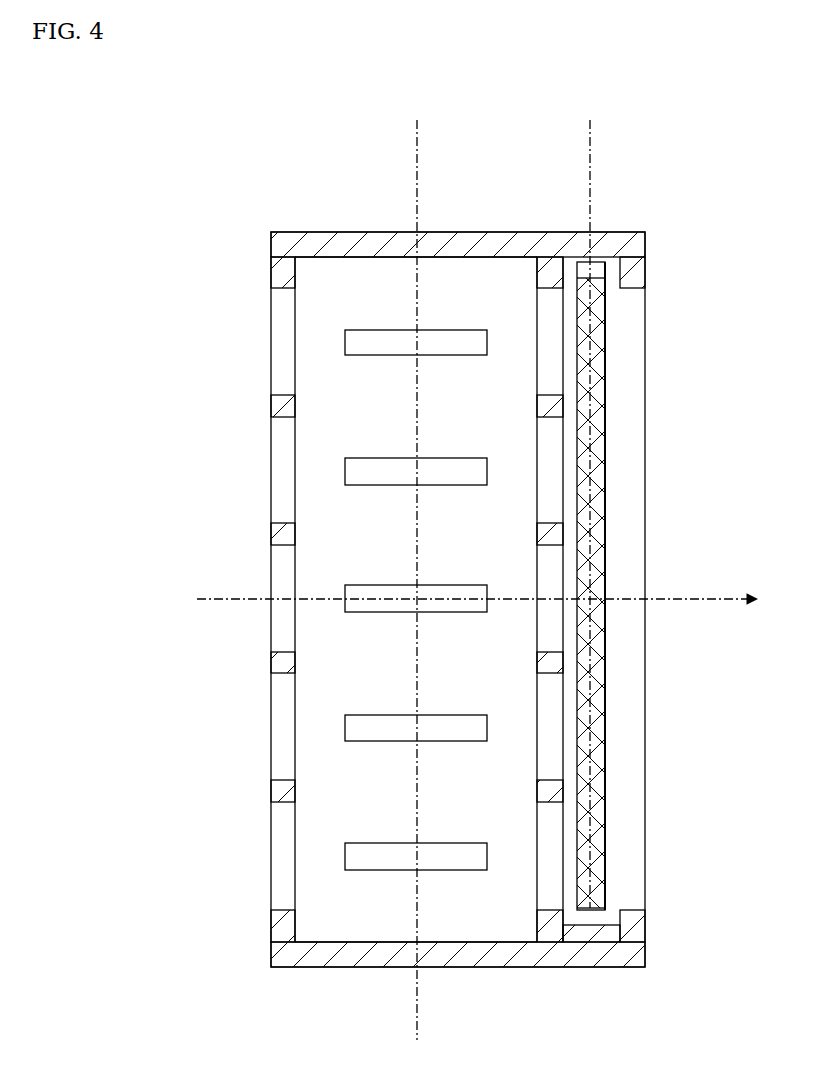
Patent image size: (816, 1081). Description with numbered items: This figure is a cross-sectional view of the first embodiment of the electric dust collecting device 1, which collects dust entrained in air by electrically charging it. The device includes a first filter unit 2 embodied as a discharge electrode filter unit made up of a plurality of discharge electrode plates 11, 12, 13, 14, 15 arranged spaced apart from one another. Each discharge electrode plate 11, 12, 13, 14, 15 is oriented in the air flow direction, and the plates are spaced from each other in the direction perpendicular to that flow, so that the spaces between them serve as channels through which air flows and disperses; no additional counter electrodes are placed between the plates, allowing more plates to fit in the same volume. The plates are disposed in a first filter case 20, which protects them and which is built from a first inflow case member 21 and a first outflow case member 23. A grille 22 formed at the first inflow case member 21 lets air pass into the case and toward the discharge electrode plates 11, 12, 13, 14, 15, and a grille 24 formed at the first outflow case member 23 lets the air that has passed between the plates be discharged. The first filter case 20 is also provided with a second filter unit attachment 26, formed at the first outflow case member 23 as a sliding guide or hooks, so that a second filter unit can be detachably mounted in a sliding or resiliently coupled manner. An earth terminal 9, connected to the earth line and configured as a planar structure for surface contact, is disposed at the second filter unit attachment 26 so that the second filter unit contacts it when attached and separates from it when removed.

The electric dust collecting device 1 is at (237, 225).
The first filter unit 2 is at (372, 886).
The earth terminal 9 is at (595, 936).
The discharge electrode plate 11 is at (345, 345).
The discharge electrode plate 12 is at (345, 475).
The discharge electrode plate 13 is at (345, 597).
The discharge electrode plate 14 is at (345, 730).
The discharge electrode plate 15 is at (345, 858).
The first filter case 20 is at (392, 225).
The first inflow case member 21 is at (340, 235).
The grille 22 is at (271, 405).
The first outflow case member 23 is at (445, 243).
The grille 24 is at (540, 396).
The second filter unit attachment 26 is at (633, 266).